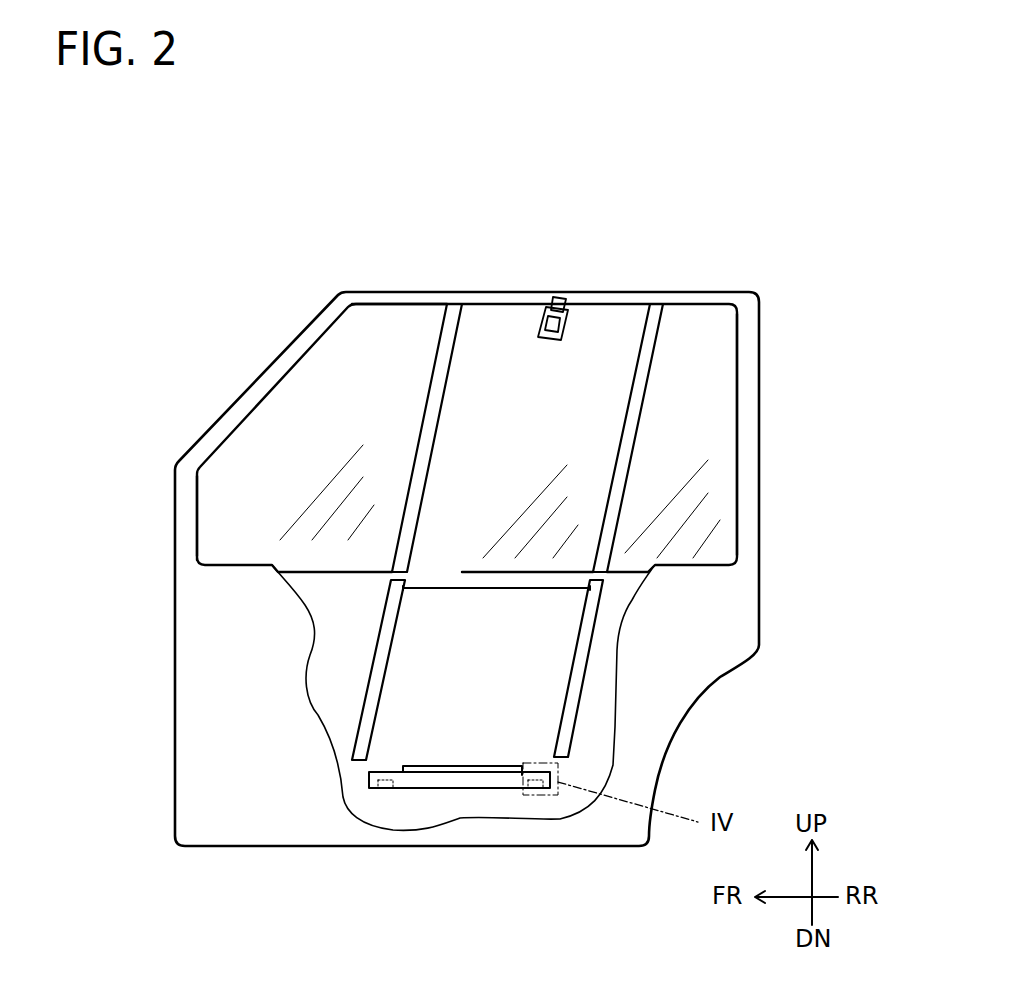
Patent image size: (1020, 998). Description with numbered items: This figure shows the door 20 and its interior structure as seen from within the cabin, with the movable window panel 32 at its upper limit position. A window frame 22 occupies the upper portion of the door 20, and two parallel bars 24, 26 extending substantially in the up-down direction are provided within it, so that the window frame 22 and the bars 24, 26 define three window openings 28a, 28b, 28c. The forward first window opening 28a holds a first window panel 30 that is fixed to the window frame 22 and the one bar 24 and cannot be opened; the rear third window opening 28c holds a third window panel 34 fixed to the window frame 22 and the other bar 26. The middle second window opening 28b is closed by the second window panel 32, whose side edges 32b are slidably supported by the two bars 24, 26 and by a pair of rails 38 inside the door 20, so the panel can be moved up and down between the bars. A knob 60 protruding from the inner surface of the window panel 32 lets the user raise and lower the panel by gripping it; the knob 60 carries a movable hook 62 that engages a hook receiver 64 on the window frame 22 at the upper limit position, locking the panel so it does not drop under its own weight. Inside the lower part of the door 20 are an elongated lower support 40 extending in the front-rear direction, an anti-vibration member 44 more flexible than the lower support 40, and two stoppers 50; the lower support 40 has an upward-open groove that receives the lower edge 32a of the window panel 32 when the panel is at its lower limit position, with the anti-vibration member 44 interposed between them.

The door 20 is at (787, 246).
The window frame 22 is at (258, 394).
The bar 24 is at (448, 332).
The bar 26 is at (652, 330).
The first window opening 28a is at (198, 532).
The second window opening 28b is at (437, 433).
The third window opening 28c is at (737, 366).
The first window panel 30 is at (265, 465).
The second window panel 32 is at (470, 560).
The lower edge 32a is at (450, 582).
The side edges 32b is at (393, 575).
The third window panel 34 is at (689, 363).
The rails 38 is at (367, 700).
The lower support 40 is at (408, 780).
The anti-vibration member 44 is at (413, 767).
The stoppers 50 is at (380, 790).
The knob 60 is at (550, 229).
The hook 62 is at (546, 318).
The hook receiver 64 is at (560, 300).